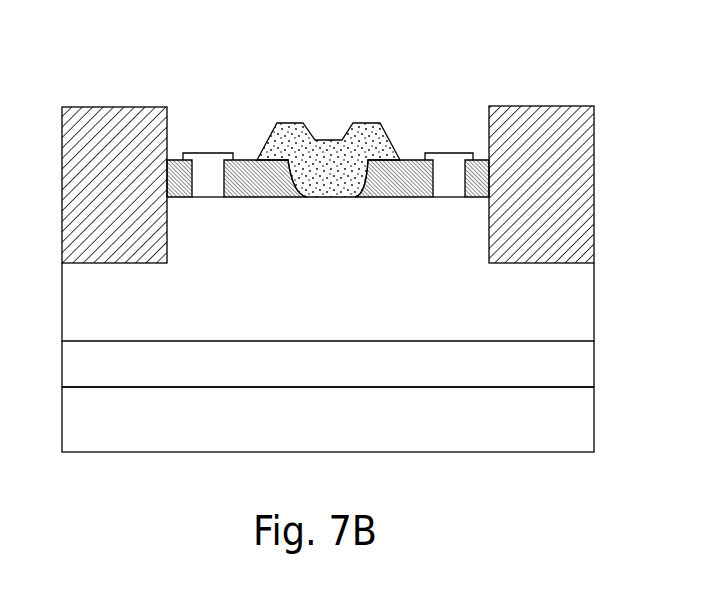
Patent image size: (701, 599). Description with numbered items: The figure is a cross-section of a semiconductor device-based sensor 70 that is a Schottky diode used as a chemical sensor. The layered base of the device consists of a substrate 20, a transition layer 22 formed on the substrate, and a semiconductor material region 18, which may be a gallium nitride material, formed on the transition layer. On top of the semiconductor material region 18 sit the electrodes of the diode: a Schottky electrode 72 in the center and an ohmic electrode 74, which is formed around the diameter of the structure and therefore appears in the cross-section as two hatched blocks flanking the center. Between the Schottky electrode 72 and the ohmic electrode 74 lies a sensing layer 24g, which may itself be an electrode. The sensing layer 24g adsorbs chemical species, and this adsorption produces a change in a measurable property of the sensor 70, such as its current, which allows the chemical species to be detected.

The semiconductor device-based sensor 70 is at (84, 104).
The ohmic electrode 74 is at (104, 171).
The Schottky electrode 72 is at (313, 181).
The sensing layer 24g is at (212, 197).
The semiconductor material region 18 is at (312, 331).
The transition layer 22 is at (312, 375).
The substrate 20 is at (312, 431).